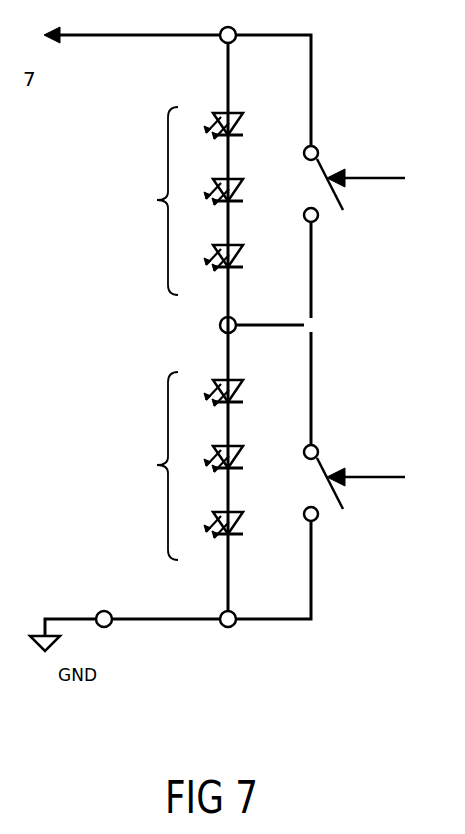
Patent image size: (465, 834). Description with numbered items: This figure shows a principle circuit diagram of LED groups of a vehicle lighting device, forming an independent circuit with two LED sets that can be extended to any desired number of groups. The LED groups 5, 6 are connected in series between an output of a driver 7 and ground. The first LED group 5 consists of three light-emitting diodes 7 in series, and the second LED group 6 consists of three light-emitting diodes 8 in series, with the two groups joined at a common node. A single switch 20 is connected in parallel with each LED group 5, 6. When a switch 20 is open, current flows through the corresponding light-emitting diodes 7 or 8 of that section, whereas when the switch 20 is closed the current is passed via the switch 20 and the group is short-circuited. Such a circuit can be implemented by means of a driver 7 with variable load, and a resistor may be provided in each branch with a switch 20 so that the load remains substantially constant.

The LED group 5 is at (145, 201).
The LED group 6 is at (145, 466).
The light-emitting diode 7 is at (246, 111).
The light-emitting diode 8 is at (246, 378).
The switch 20 is at (349, 147).